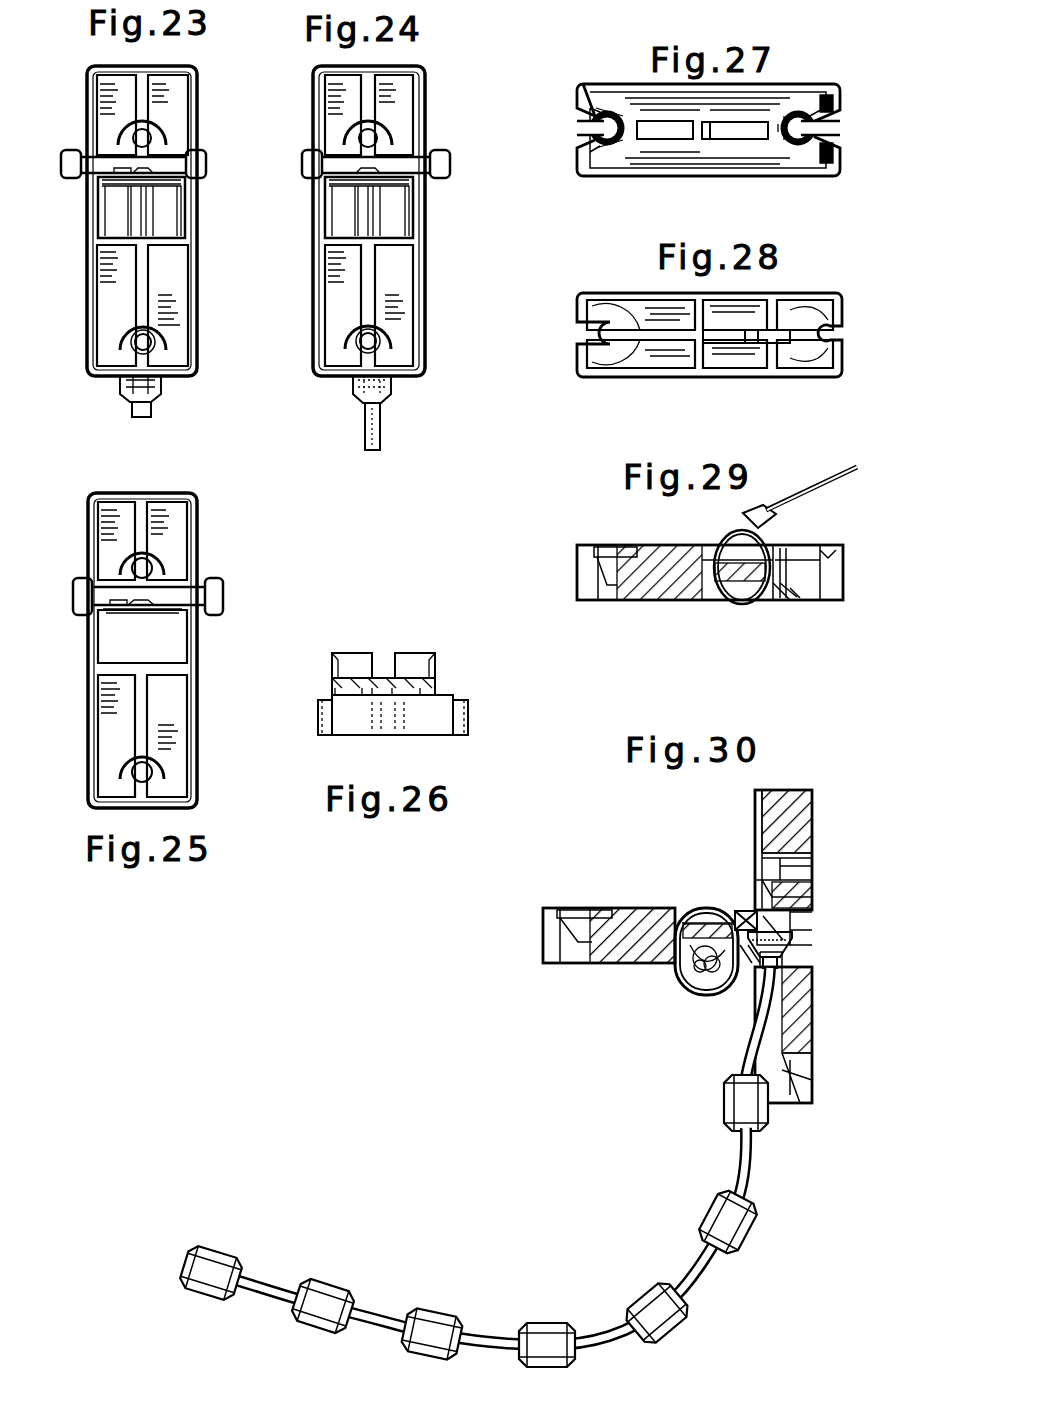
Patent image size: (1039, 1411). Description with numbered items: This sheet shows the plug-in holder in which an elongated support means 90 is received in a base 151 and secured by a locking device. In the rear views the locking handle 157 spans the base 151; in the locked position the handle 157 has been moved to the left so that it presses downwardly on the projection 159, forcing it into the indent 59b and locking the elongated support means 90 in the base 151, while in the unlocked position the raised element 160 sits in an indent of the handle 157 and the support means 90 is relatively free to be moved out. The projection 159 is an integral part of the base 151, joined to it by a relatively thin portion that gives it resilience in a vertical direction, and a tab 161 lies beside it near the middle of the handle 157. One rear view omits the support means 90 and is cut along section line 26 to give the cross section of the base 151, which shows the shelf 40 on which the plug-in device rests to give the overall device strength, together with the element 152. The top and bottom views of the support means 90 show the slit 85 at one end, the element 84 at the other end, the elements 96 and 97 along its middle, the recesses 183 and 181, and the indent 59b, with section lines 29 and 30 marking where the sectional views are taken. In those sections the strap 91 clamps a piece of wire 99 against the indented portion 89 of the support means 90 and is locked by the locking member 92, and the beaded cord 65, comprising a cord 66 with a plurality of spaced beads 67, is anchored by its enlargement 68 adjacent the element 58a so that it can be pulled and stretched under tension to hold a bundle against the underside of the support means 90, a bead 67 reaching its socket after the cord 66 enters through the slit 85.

In FIG. 23, the base 151 is at (203, 73).
In FIG. 24, the base 151 is at (430, 89).
In FIG. 25, the base 151 is at (205, 516).
In FIG. 26, the base 151 is at (448, 670).
In FIG. 30, the base 151 is at (735, 808).
In FIG. 23, the element 152 of base 152 is at (150, 132).
In FIG. 24, the element 152 of base 152 is at (375, 137).
In FIG. 25, the element 152 of base 152 is at (150, 771).
In FIG. 30, the element 152 of base 152 is at (760, 850).
In FIG. 23, the locking handle 157 is at (203, 166).
In FIG. 24, the locking handle 157 is at (447, 166).
In FIG. 25, the locking handle 157 is at (213, 577).
In FIG. 26, the locking handle 157 is at (470, 717).
In FIG. 30, the locking handle 157 is at (812, 890).
In FIG. 23, the projection 159 is at (178, 192).
In FIG. 24, the projection 159 is at (410, 191).
In FIG. 25, the projection 159 is at (157, 612).
In FIG. 23, the raised element 160 is at (145, 170).
In FIG. 25, the raised element 160 is at (138, 607).
In FIG. 23, the tab 161 is at (121, 170).
In FIG. 25, the tab 161 is at (118, 600).
In FIG. 23, the elongated support means 90 is at (190, 225).
In FIG. 24, the elongated support means 90 is at (403, 226).
In FIG. 27, the elongated support means 90 is at (805, 83).
In FIG. 28, the elongated support means 90 is at (608, 284).
In FIG. 29, the elongated support means 90 is at (660, 604).
In FIG. 30, the elongated support means 90 is at (592, 967).
In FIG. 27, the slit 85 is at (588, 128).
In FIG. 28, the slit 85 is at (597, 335).
In FIG. 29, the slit 85 is at (588, 573).
In FIG. 30, the slit 85 is at (550, 936).
In FIG. 27, the element 84 of support means 84 is at (822, 130).
In FIG. 28, the element 84 of support means 84 is at (828, 337).
In FIG. 29, the element 84 of support means 84 is at (838, 571).
In FIG. 27, the recess 183 is at (602, 106).
In FIG. 29, the recess 183 is at (613, 546).
In FIG. 30, the recess 183 is at (577, 912).
In FIG. 27, the recess 181 is at (803, 148).
In FIG. 29, the recess 181 is at (803, 553).
In FIG. 30, the recess 181 is at (768, 916).
In FIG. 27, the indent 59b is at (836, 103).
In FIG. 29, the indent 59b is at (833, 546).
In FIG. 30, the indent 59b is at (805, 927).
In FIG. 30, the element 58a is at (803, 916).
In FIG. 30, the enlargement 68 is at (792, 940).
In FIG. 27, the element 96 of support means 96 is at (706, 140).
In FIG. 28, the element 96 of support means 96 is at (712, 345).
In FIG. 29, the element 96 of support means 96 is at (715, 546).
In FIG. 30, the element 96 of support means 96 is at (677, 912).
In FIG. 27, the element 97 of support means 97 is at (766, 140).
In FIG. 28, the element 97 of support means 97 is at (772, 345).
In FIG. 29, the element 97 of support means 97 is at (785, 592).
In FIG. 30, the element 97 of support means 97 is at (730, 985).
In FIG. 29, the locking member 92 is at (748, 513).
In FIG. 30, the locking member 92 is at (737, 912).
In FIG. 29, the indented portion 89 is at (728, 602).
In FIG. 29, the strap 91 is at (740, 614).
In FIG. 30, the strap 91 is at (697, 985).
In FIG. 30, the wire 99 is at (692, 978).
In FIG. 26, the shelf 40 is at (416, 657).
In FIG. 30, the shelf 40 is at (757, 978).
In FIG. 30, the beaded cord 65 is at (670, 1253).
In FIG. 30, the cord 66 is at (482, 1336).
In FIG. 30, the bead 67 is at (313, 1284).
In FIG. 23, the section line 30 is at (168, 50).
In FIG. 27, the section line 29 is at (563, 130).
In FIG. 25, the section line 26— 26 is at (72, 588).